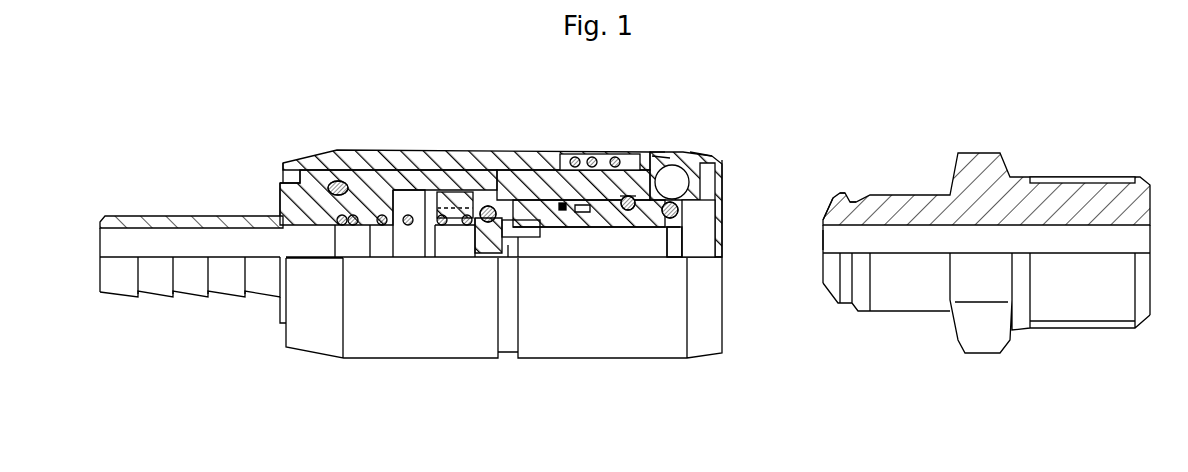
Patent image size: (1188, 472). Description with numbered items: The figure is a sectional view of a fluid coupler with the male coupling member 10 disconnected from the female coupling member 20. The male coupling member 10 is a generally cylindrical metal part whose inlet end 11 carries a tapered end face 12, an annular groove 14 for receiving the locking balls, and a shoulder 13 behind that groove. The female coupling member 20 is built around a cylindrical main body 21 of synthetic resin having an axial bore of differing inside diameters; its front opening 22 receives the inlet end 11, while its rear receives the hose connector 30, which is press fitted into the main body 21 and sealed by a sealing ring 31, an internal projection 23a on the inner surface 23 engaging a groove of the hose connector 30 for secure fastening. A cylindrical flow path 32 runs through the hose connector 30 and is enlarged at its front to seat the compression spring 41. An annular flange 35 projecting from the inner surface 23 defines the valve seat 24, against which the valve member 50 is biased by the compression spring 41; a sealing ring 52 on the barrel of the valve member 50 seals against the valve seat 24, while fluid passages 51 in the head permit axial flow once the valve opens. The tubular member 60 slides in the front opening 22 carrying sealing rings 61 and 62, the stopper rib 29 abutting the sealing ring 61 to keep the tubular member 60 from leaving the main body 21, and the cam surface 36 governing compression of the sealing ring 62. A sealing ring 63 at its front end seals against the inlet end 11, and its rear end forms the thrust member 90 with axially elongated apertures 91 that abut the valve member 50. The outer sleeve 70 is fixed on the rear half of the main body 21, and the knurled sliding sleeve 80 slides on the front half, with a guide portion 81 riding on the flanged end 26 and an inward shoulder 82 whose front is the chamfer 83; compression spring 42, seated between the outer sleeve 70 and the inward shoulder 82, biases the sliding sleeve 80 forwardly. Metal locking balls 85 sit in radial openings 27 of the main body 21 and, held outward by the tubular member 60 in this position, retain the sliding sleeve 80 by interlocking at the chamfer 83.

The male coupling member 10 is at (929, 318).
The inlet end 11 is at (823, 242).
The tapered end face 12 is at (828, 212).
The shoulder 13 is at (840, 192).
The annular groove 14 is at (855, 200).
The female coupling member 20 is at (295, 371).
The main body 21 is at (400, 190).
The front opening 22 is at (702, 215).
The inner surface 23 is at (422, 258).
The internal projection 23a is at (380, 205).
The valve seat 24 is at (505, 195).
The flanged end 26 is at (724, 158).
The radial openings 27 is at (680, 184).
The stopper rib 29 is at (577, 158).
The hose connector 30 is at (197, 278).
The sealing ring 31 is at (330, 180).
The flow path 32 is at (197, 234).
The annular flange 35 is at (562, 202).
The cam surface 36 is at (585, 208).
The compression spring 41 is at (408, 228).
The compression spring 42 is at (595, 159).
The valve member 50 is at (483, 258).
The fluid passages 51 is at (455, 190).
The sealing ring 52 is at (480, 205).
The tubular member 60 is at (583, 228).
The sealing ring 61 is at (565, 228).
The sealing ring 62 is at (631, 197).
The sealing ring 63 is at (681, 221).
The outer sleeve 70 is at (426, 150).
The sliding sleeve 80 is at (670, 359).
The guide portion 81 is at (698, 153).
The inward shoulder 82 is at (656, 155).
The chamfer 83 is at (664, 158).
The locking balls 85 is at (712, 183).
The thrust member 90 is at (510, 258).
The apertures 91 is at (525, 240).